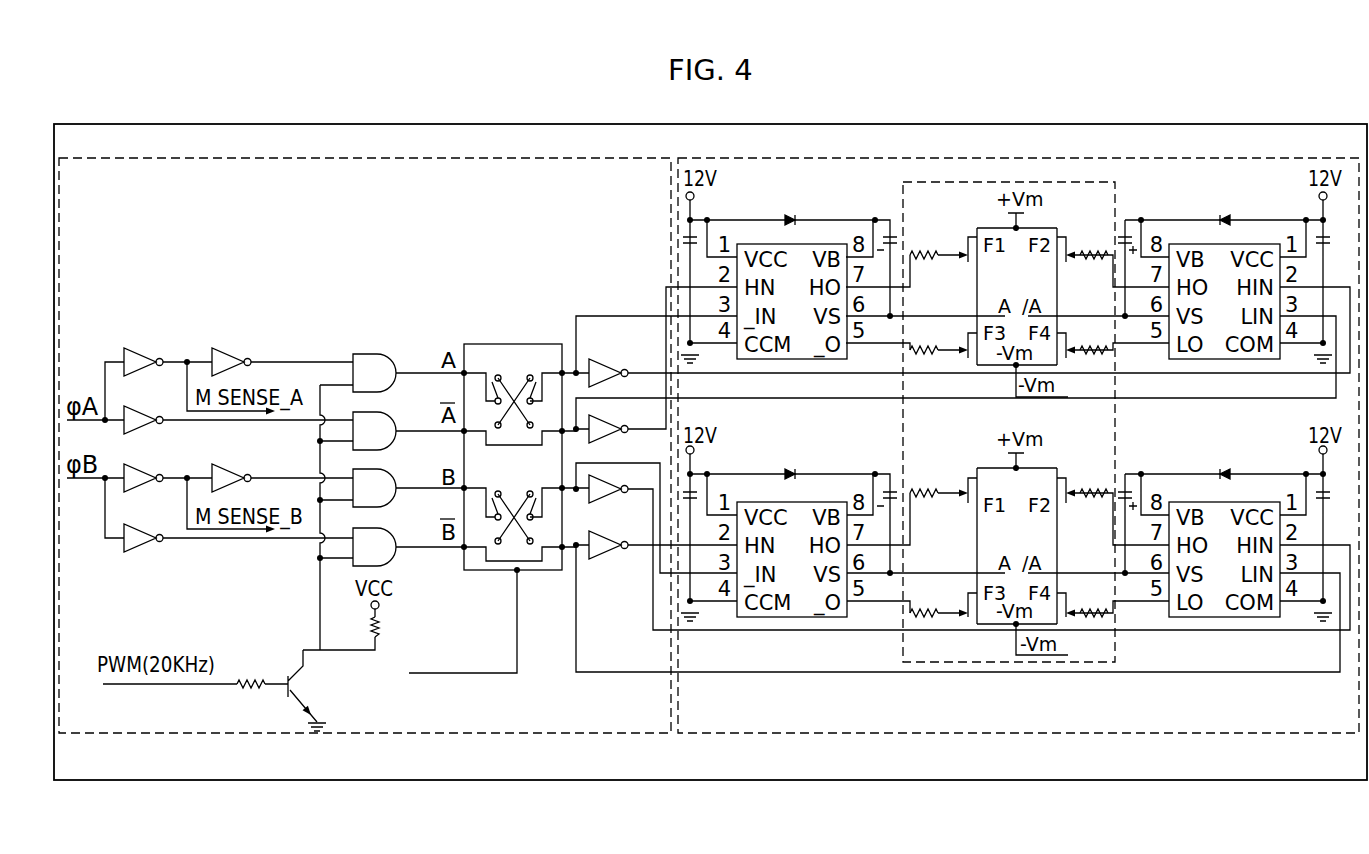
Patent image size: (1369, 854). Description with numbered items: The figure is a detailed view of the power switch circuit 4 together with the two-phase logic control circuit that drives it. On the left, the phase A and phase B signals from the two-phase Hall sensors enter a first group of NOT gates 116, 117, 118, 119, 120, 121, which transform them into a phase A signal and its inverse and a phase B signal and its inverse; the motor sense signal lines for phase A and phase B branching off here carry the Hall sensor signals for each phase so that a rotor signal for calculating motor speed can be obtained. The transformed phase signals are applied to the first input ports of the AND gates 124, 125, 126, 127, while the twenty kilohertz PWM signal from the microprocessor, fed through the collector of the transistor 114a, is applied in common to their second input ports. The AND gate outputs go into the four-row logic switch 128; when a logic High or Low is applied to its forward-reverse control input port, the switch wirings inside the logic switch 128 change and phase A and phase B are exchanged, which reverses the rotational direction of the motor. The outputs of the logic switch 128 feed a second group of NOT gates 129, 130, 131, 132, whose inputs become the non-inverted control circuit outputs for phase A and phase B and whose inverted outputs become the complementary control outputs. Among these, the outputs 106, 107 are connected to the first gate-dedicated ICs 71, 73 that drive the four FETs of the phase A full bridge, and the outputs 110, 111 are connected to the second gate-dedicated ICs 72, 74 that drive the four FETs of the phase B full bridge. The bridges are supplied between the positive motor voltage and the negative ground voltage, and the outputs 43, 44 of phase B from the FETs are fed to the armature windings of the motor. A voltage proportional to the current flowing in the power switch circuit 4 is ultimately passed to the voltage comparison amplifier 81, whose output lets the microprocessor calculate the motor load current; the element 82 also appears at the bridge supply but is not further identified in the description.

The power switch circuit 4 is at (902, 650).
The output of phase B 43 is at (985, 312).
The output of phase B 44 is at (1050, 312).
The first gate-dedicated IC 71 is at (818, 243).
The second gate-dedicated IC 72 is at (780, 619).
The first gate-dedicated IC 73 is at (1232, 361).
The second gate-dedicated IC 74 is at (1233, 619).
The voltage comparison amplifier 81 is at (1068, 399).
The positive motor voltage terminal +Vm 82 is at (1022, 213).
The output of the 2 phase logic control circuit 106 is at (735, 375).
The output of the 2 phase logic control circuit 107 is at (802, 400).
The output of the 2 phase logic control circuit 110 is at (825, 632).
The output of the 2 phase logic control circuit 111 is at (733, 674).
The transistor 114a is at (290, 675).
The NOT gate 116 is at (143, 351).
The NOT gate 117 is at (235, 351).
The NOT gate 118 is at (153, 400).
The NOT gate 119 is at (153, 459).
The NOT gate 120 is at (242, 459).
The NOT gate 121 is at (146, 527).
The AND gate 124 is at (417, 347).
The AND gate 125 is at (417, 404).
The AND gate 126 is at (417, 464).
The AND gate 127 is at (417, 524).
The four-row logic switch 128 is at (500, 571).
The NOT gate 129 is at (606, 366).
The NOT gate 130 is at (607, 437).
The NOT gate 131 is at (606, 495).
The NOT gate 132 is at (606, 552).